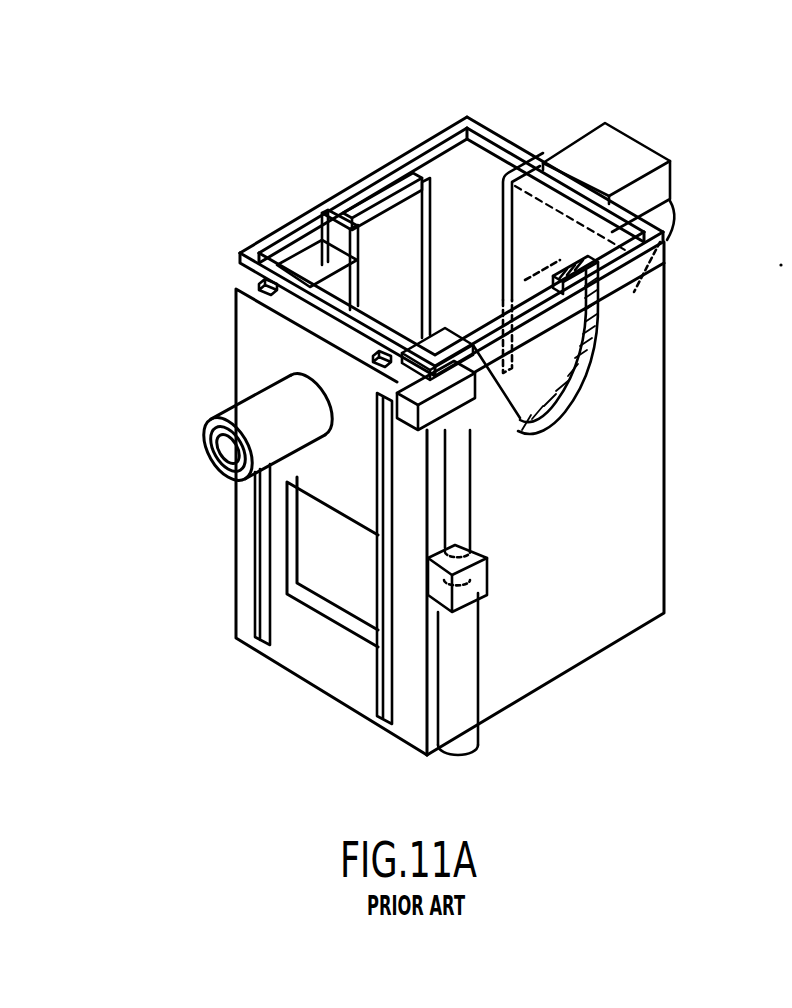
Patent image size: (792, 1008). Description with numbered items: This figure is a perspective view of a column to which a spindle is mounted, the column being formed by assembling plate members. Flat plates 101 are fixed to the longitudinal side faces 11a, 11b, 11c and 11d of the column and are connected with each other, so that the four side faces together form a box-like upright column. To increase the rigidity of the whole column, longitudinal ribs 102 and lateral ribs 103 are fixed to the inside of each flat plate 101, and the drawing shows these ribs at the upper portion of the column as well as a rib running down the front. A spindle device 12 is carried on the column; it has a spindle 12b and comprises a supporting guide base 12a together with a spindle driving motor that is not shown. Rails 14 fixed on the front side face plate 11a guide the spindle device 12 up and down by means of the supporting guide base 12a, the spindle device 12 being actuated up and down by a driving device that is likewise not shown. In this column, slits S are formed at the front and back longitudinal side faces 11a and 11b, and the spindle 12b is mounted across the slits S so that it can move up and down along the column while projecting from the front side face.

The slit S is at (497, 173).
The front longitudinal side face 11a is at (243, 570).
The back longitudinal side face 11b is at (513, 137).
The longitudinal side face 11c is at (338, 185).
The longitudinal side face 11d is at (630, 507).
The spindle device 12 is at (457, 470).
The supporting guide base 12a is at (253, 328).
The spindle 12b is at (222, 462).
The rail 14 is at (257, 603).
The flat plate 101 is at (265, 242).
The longitudinal rib 102 is at (386, 176).
The lateral rib 103 is at (310, 267).